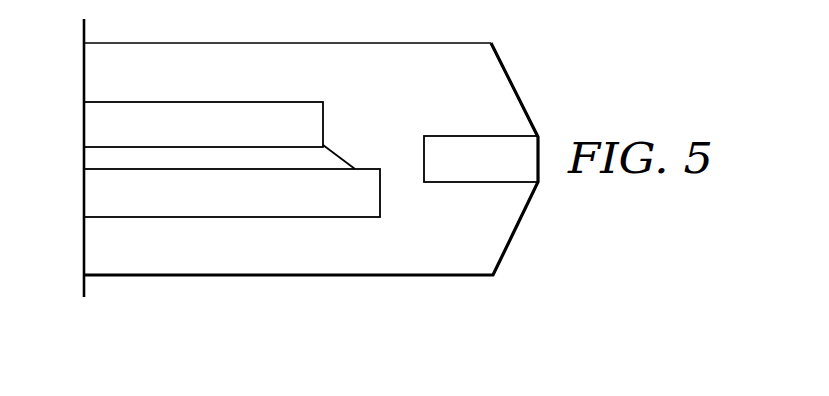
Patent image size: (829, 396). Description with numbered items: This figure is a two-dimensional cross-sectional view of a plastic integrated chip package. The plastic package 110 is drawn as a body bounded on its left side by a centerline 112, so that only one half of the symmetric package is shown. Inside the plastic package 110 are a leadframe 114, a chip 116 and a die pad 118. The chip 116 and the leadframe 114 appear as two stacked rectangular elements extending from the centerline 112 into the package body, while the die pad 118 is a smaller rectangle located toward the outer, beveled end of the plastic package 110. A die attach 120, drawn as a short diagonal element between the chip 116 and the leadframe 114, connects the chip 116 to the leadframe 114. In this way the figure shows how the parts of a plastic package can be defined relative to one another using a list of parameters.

The plastic package 110 is at (471, 253).
The centerline 112 is at (85, 287).
The leadframe 114 is at (153, 203).
The chip 116 is at (153, 113).
The die pad 118 is at (459, 136).
The die attach 120 is at (345, 153).